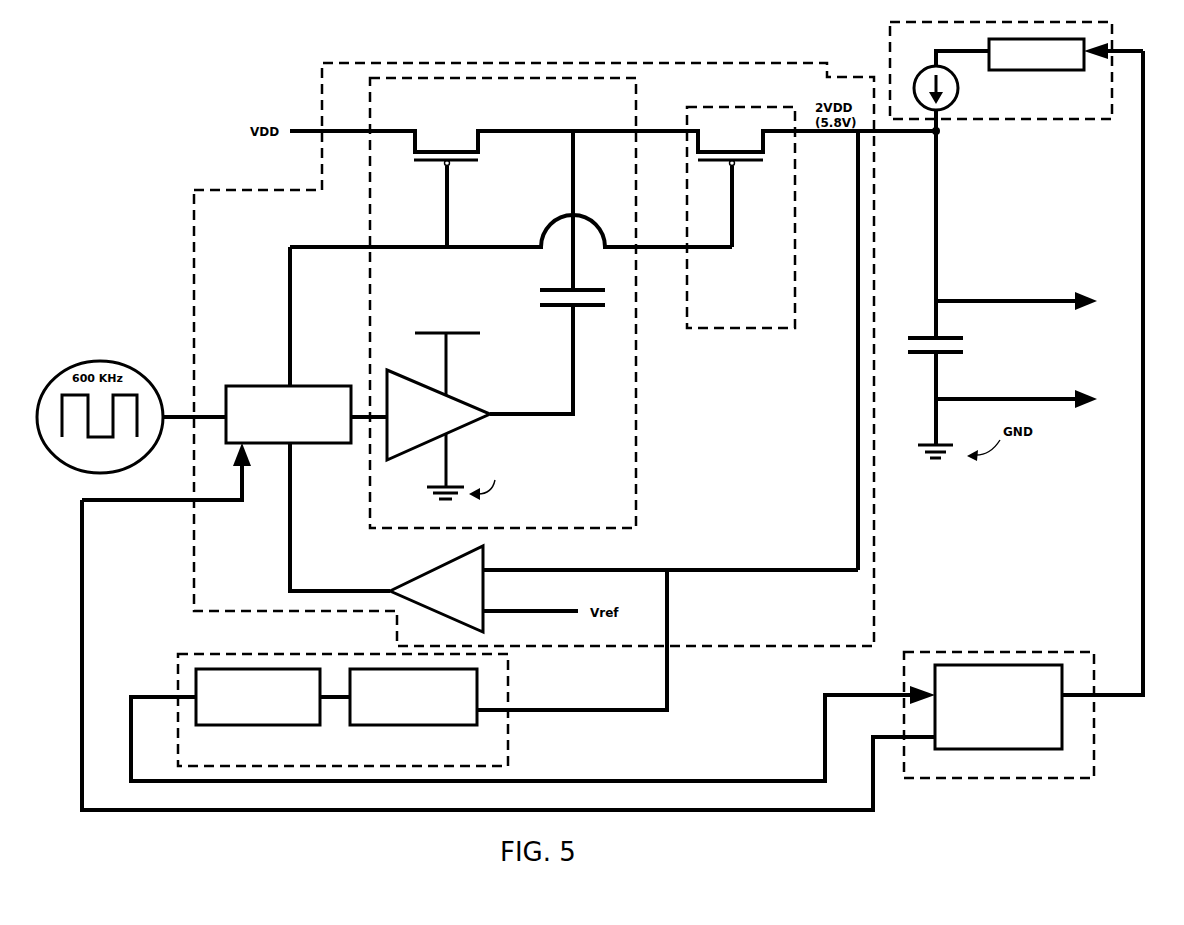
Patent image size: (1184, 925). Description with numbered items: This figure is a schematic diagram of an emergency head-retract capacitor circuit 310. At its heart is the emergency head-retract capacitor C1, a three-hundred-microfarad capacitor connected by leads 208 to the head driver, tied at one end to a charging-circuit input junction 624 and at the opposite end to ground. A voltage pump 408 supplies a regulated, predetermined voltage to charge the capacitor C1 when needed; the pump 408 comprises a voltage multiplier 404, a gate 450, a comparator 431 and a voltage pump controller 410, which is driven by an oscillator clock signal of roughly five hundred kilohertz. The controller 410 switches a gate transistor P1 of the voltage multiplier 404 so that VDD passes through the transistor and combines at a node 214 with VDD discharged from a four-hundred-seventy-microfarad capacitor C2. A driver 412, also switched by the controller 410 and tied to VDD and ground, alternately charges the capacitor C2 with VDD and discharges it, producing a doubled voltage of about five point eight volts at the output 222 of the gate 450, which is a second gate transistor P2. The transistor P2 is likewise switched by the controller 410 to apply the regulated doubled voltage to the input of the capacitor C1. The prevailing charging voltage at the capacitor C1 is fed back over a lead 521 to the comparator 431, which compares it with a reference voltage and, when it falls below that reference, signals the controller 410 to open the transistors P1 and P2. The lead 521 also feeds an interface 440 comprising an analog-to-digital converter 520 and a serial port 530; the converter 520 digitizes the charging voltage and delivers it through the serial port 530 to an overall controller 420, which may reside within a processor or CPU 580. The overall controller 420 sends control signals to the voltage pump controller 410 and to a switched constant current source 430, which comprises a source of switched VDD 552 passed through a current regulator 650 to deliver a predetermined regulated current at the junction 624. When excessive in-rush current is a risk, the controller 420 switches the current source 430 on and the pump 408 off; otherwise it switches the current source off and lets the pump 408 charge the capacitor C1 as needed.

The voltage pump system 310 is at (252, 102).
The voltage pump 408 is at (801, 611).
The voltage multiplier 404 is at (594, 495).
The gate 450 is at (771, 307).
The switched constant current source 430 is at (1086, 115).
The interface 440 is at (441, 760).
The CPU 580 is at (1044, 773).
The voltage pump controller 410 is at (302, 433).
The driver 412 is at (463, 397).
The comparator 431 is at (464, 607).
The gate transistor P1 is at (458, 164).
The second gate transistor P2 is at (745, 164).
The node 214 is at (573, 131).
The capacitor C2 is at (589, 290).
The 2VDD output node 222 is at (855, 133).
The lead 521 is at (855, 468).
The node 624 is at (940, 133).
The current source 650 is at (958, 88).
The source of switched VDD 552 is at (1063, 70).
The emergency head-retract capacitor C1 is at (953, 355).
The leads 208 is at (1012, 303).
The serial port 530 is at (271, 713).
The analog-to-digital converter 520 is at (426, 713).
The overall controller 420 is at (1011, 731).